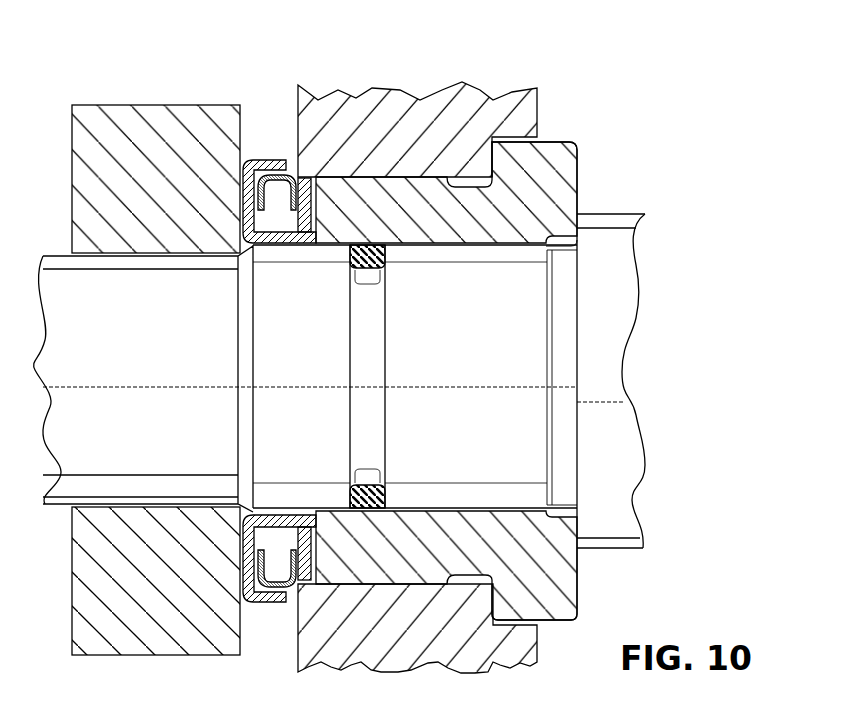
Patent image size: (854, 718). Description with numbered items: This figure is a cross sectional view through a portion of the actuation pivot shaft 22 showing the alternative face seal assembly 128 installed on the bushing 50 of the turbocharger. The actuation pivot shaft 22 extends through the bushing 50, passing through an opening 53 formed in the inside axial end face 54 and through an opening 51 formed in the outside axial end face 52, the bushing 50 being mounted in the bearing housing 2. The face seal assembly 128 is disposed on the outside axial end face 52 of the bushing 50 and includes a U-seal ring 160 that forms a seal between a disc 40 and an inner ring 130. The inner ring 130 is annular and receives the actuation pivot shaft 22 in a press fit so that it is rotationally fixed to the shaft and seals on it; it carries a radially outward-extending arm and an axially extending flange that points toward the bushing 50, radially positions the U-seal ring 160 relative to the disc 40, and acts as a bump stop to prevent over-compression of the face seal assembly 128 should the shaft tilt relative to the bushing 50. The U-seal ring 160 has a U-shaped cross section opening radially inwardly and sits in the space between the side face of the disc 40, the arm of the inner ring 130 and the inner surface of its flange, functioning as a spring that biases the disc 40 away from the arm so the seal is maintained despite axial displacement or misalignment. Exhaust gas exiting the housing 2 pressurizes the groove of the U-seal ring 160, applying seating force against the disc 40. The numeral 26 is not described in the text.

The bearing housing 2 is at (450, 107).
The actuation pivot shaft 22 is at (166, 427).
The wall 26 is at (151, 112).
The disc 40 is at (311, 200).
The bushing 50 is at (547, 146).
The opening 51 is at (337, 517).
The outside axial end face 52 is at (305, 557).
The opening 53 is at (577, 522).
The inside axial end face 54 is at (577, 597).
The face seal assembly 128 is at (277, 606).
The inner ring 130 is at (281, 159).
The U-seal ring 160 is at (276, 197).